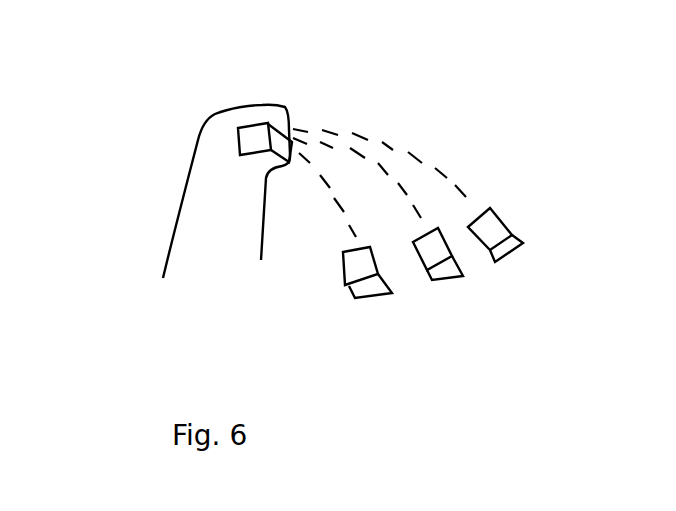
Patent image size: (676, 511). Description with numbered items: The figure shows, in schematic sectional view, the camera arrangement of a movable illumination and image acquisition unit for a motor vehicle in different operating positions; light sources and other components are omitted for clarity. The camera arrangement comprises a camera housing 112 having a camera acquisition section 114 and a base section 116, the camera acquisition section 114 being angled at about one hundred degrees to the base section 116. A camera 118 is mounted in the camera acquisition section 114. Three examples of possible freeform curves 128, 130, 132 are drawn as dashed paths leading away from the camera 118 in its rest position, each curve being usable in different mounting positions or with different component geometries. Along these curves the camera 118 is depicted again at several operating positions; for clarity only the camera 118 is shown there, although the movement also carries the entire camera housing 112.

The camera housing 112 is at (218, 242).
The camera acquisition section 114 is at (218, 142).
The base section 116 is at (183, 230).
The camera 118 is at (260, 128).
The freeform curve 128 is at (437, 177).
The freeform curve 130 is at (378, 172).
The freeform curve 132 is at (322, 177).